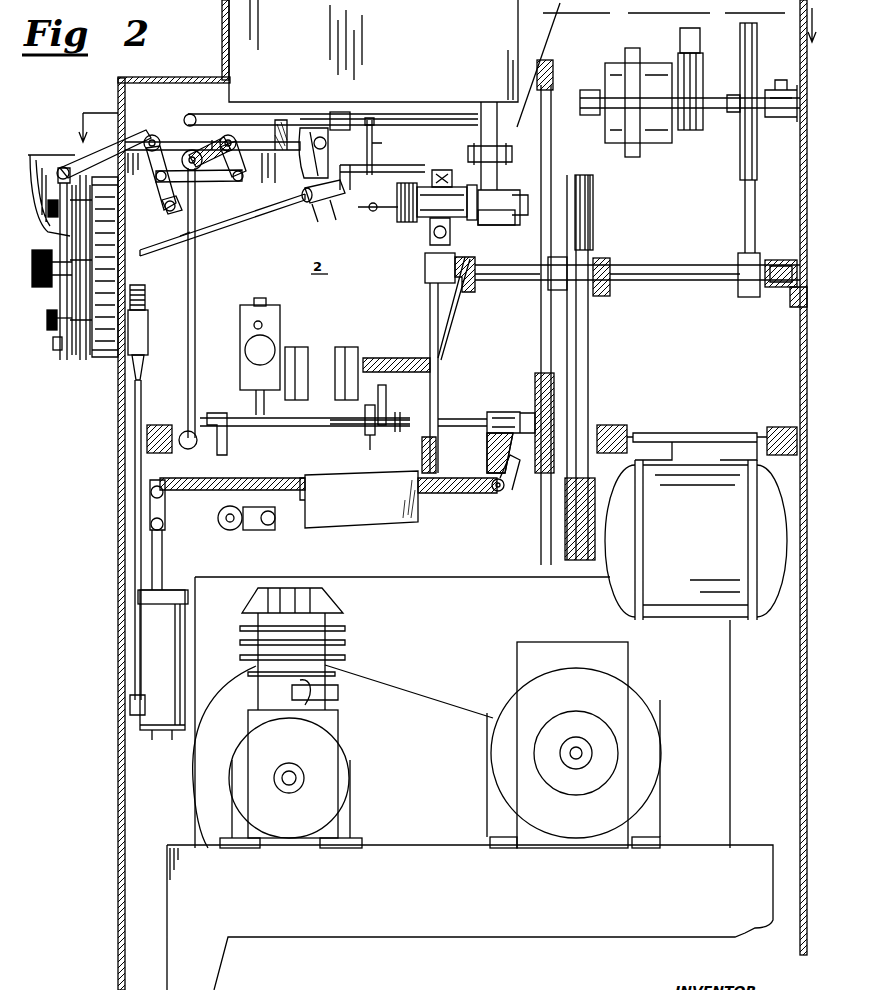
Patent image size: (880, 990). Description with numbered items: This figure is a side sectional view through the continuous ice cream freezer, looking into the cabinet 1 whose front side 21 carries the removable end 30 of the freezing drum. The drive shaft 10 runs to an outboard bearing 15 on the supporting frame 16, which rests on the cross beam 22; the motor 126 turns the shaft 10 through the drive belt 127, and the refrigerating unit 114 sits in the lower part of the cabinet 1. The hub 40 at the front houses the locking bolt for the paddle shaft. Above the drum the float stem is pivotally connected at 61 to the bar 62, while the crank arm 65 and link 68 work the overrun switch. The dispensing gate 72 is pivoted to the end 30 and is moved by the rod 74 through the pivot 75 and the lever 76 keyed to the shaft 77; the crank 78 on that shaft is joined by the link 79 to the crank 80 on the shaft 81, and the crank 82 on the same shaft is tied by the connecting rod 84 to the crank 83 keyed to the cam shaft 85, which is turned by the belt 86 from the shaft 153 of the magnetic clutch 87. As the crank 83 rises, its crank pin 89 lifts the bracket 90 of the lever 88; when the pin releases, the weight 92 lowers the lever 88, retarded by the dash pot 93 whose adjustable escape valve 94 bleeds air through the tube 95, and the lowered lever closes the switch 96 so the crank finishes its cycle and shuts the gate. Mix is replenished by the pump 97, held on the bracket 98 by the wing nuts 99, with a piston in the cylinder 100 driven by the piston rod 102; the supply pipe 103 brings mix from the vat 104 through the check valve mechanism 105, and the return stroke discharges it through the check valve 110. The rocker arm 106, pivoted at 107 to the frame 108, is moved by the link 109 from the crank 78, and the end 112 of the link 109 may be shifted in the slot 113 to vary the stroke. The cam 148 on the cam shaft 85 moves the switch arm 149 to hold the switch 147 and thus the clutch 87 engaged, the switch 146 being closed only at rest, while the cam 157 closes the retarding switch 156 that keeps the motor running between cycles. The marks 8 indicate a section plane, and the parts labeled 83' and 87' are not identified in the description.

The cabinet 1 is at (118, 855).
The section line 8 is at (437, 75).
The shaft 10 is at (620, 272).
The outboard bearing 15 is at (476, 262).
The supporting frame 16 is at (439, 364).
The front side 21 is at (119, 426).
The cross beam 22 is at (417, 455).
The removable end 30 is at (92, 352).
The hub 40 is at (50, 287).
The pivotal connection 61 is at (187, 117).
The bar 62 is at (232, 137).
The crank arm 65 is at (350, 114).
The link 68 is at (313, 127).
The dispensing gate 72 is at (48, 322).
The rod 74 is at (58, 233).
The pivot 75 is at (56, 348).
The lever 76 is at (88, 166).
The shaft 77 is at (152, 135).
The crank 78 is at (164, 180).
The link 79 is at (164, 201).
The crank 80 is at (246, 177).
The shaft 81 is at (236, 140).
The crank 82 is at (212, 140).
The crank 83 is at (220, 439).
The bracket 83' is at (333, 464).
The connecting rod 84 is at (196, 272).
The cam shaft 85 is at (360, 424).
The belt 86 is at (543, 355).
The magnetic clutch 87 is at (690, 102).
The belt 87' is at (768, 138).
The lever 88 is at (328, 489).
The crank pin 89 is at (177, 441).
The bracket 90 is at (150, 488).
The weight 92 is at (359, 499).
The dash pot 93 is at (163, 665).
The adjustable escape valve 94 is at (141, 332).
The tube 95 is at (135, 552).
The switch 96 is at (256, 528).
The pump 97 is at (437, 202).
The bracket 98 is at (425, 262).
The wing nuts 99 is at (441, 169).
The cylinder 100 is at (430, 223).
The piston rod 102 is at (372, 211).
The supply pipe 103 is at (497, 126).
The vat or container 104 is at (507, 63).
The check valve mechanism 105 is at (504, 195).
The rocker arm 106 is at (310, 212).
The pivot 107 is at (380, 143).
The frame 108 is at (250, 222).
The link 109 is at (181, 240).
The check valve 110 is at (497, 225).
The end of link 112 is at (305, 202).
The slot 113 is at (382, 177).
The refrigerating unit 114 is at (461, 712).
The motor 126 is at (697, 522).
The drive belt 127 is at (584, 398).
The switch 146 is at (302, 346).
The switch 147 is at (350, 346).
The cam 148 is at (369, 442).
The switch arm 149 is at (395, 402).
The shaft 153 is at (706, 98).
The retarding switch 156 is at (260, 356).
The cam 157 is at (286, 428).